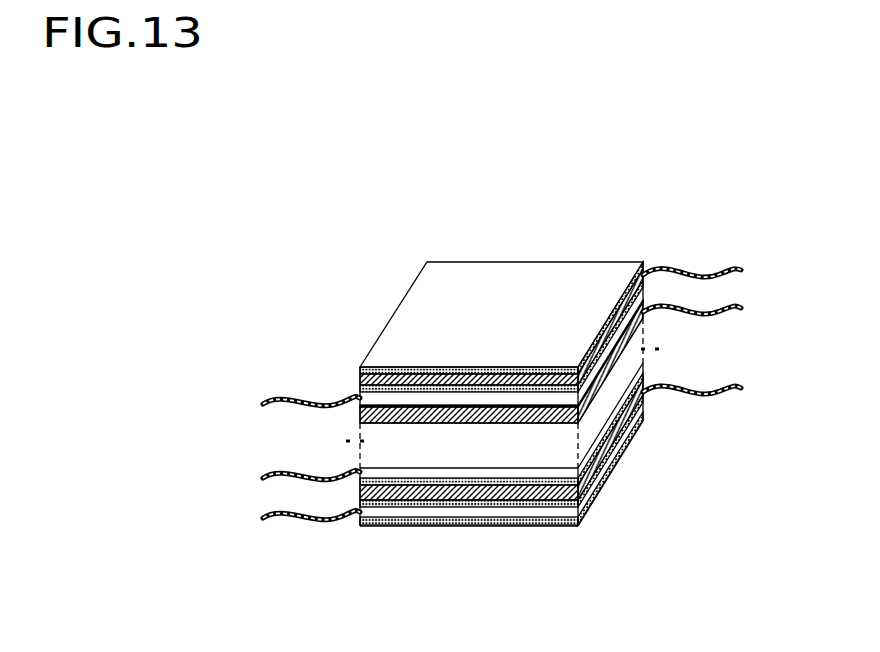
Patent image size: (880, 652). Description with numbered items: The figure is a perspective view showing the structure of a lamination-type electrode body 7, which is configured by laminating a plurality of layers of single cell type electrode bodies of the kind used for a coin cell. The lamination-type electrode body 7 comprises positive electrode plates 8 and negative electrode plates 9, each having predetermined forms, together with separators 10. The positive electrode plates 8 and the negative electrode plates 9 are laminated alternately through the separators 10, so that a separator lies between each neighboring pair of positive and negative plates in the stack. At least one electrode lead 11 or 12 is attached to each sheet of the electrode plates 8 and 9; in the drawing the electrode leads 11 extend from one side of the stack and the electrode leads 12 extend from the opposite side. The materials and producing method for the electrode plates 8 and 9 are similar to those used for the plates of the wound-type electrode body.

The lamination-type electrode body 7 is at (440, 250).
The positive electrode plates 8 is at (355, 381).
The negative electrode plates 9 is at (452, 510).
The separators 10 is at (534, 527).
The electrode lead 11 is at (738, 314).
The electrode lead 12 is at (278, 398).